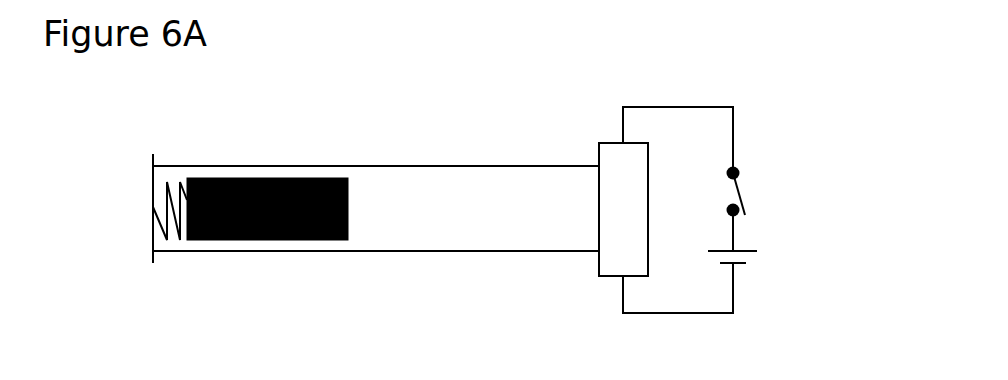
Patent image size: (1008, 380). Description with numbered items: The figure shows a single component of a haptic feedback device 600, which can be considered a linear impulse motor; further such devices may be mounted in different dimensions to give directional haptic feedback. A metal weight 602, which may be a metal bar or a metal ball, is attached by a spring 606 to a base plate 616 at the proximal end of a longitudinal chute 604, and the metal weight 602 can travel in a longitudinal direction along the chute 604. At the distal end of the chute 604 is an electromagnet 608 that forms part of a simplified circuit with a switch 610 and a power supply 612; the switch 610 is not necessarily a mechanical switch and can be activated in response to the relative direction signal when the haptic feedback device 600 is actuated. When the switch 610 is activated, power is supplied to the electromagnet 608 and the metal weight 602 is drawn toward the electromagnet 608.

The haptic feedback device 600 is at (425, 114).
The metal weight 602 is at (250, 240).
The longitudinal chute 604 is at (190, 252).
The spring 606 is at (166, 182).
The electromagnet 608 is at (611, 143).
The switch 610 is at (762, 187).
The power supply 612 is at (777, 268).
The base plate 616 is at (152, 240).